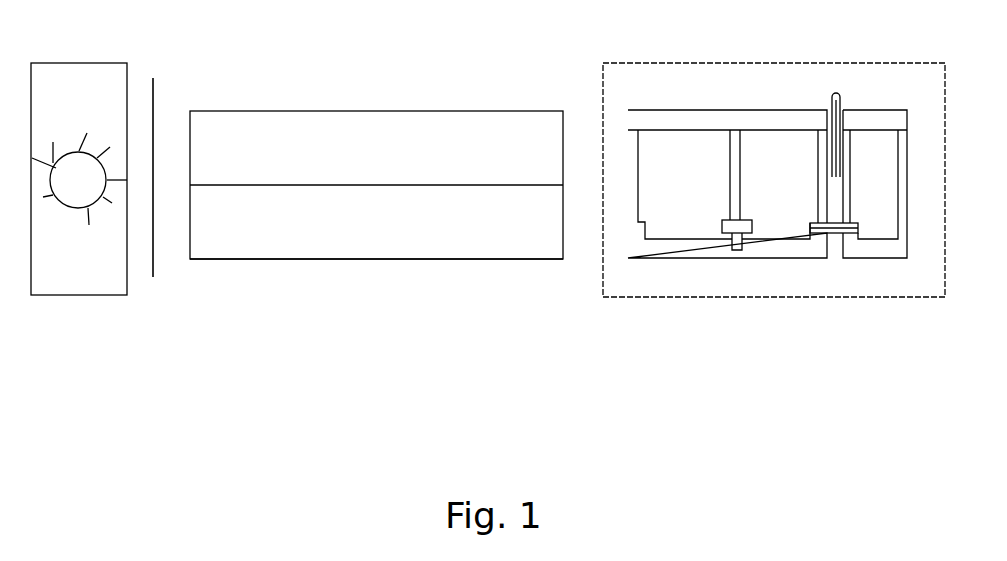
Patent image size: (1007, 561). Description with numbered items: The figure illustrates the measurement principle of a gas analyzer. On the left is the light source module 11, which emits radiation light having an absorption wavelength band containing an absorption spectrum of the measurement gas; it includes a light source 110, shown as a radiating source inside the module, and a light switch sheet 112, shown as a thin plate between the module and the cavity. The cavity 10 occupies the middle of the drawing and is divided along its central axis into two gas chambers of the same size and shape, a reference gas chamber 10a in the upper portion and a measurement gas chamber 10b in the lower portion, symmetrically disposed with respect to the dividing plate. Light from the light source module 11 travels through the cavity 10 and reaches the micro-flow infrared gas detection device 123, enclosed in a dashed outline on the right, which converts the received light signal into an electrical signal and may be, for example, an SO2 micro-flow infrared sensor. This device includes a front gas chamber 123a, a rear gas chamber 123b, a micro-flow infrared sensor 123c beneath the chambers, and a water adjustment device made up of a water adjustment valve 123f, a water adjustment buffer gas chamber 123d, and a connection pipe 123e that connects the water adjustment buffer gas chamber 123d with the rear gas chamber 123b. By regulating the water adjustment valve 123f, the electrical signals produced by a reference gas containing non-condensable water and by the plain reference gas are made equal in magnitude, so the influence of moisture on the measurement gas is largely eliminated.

The cavity 10 is at (376, 166).
The reference gas chamber 10a is at (376, 164).
The measurement gas chamber 10b is at (376, 231).
The light source module 11 is at (80, 63).
The light source 110 is at (79, 199).
The light switch sheet 112 is at (155, 80).
The micro-flow infrared gas detection device 123 is at (757, 63).
The front gas chamber 123a is at (670, 148).
The rear gas chamber 123b is at (765, 150).
The micro-flow infrared sensor 123c is at (738, 237).
The water adjustment buffer gas chamber 123d is at (873, 228).
The connection pipe 123e is at (837, 233).
The water adjustment valve 123f is at (840, 100).